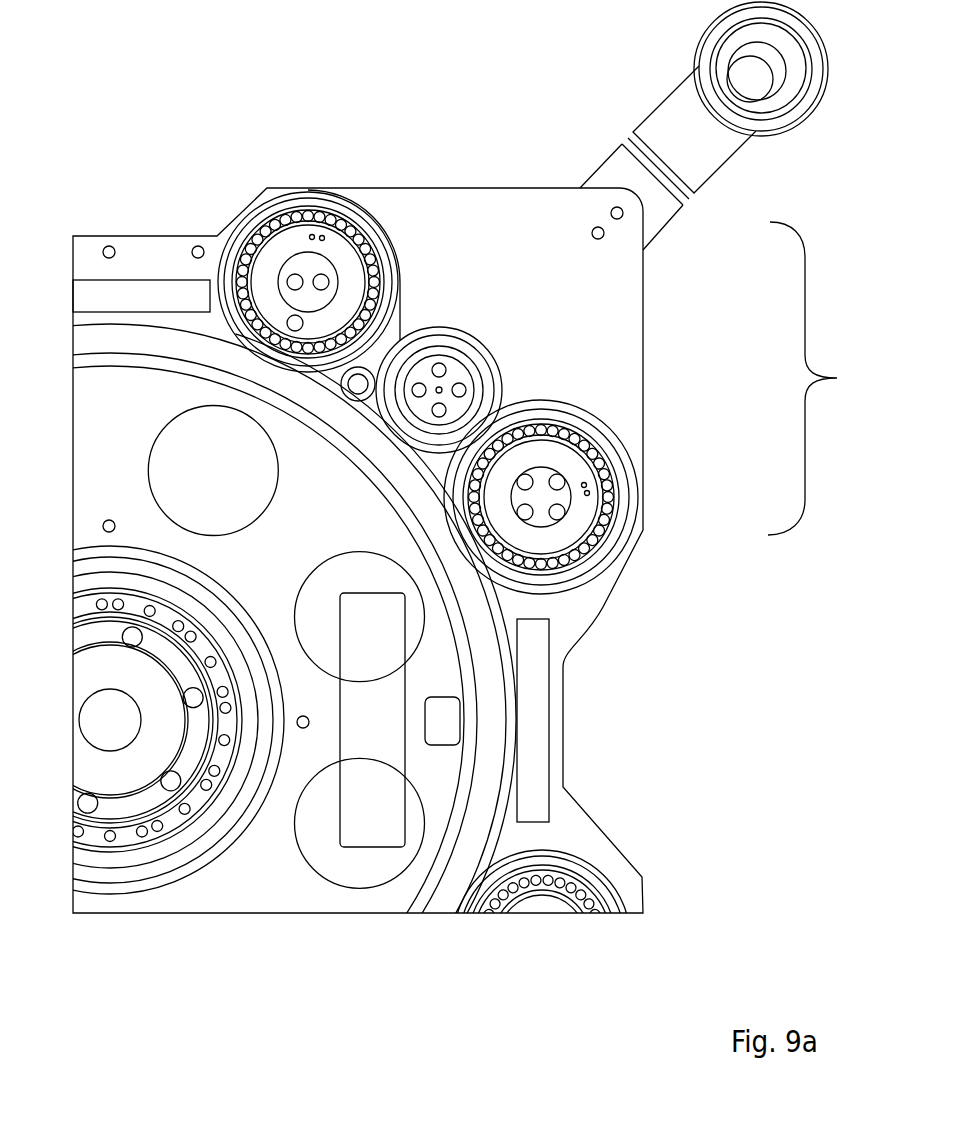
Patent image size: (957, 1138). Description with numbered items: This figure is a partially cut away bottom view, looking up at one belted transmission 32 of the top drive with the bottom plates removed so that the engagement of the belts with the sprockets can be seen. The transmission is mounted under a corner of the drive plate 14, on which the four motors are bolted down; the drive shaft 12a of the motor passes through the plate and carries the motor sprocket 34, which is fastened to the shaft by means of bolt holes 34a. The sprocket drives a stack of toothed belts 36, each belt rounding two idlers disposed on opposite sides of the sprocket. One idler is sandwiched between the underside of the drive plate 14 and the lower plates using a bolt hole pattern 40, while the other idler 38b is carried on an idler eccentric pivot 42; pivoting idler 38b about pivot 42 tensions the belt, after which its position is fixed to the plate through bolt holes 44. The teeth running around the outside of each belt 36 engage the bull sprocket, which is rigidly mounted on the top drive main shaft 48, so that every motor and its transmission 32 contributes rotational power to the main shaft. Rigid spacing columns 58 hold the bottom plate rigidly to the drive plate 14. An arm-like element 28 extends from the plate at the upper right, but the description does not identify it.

The motor drive shaft 12a is at (461, 383).
The drive plate 14 is at (136, 218).
The linkage arm 28 is at (700, 196).
The belted transmission 32 is at (814, 378).
The motor sprocket 34 is at (450, 350).
The bolt holes 34a is at (439, 405).
The toothed belt 36 is at (590, 410).
The idler 38b is at (328, 205).
The bolt hole pattern 40 is at (560, 510).
The idler eccentric pivot 42 is at (295, 316).
The bolt holes 44 is at (300, 276).
The top drive main shaft 48 is at (160, 738).
The rigid spacing column 58 is at (92, 280).